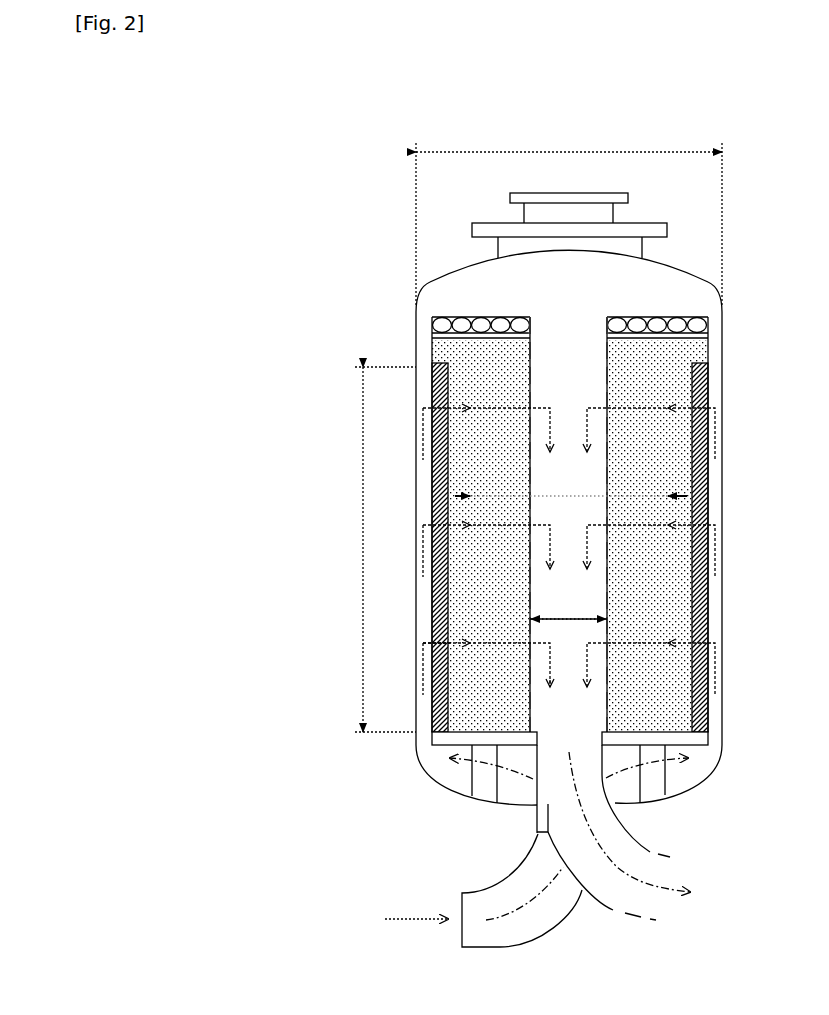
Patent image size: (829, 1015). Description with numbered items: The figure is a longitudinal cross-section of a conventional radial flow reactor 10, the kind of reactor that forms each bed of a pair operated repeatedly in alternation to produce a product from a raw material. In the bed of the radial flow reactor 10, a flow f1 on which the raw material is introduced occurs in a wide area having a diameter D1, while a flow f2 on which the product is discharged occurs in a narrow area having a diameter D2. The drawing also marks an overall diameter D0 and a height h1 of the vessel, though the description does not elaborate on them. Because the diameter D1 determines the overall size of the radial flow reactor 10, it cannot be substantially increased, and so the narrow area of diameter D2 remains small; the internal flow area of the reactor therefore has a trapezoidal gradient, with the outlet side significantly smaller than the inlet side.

The radial flow reactor 10 is at (310, 100).
The outer diameter of tower D0 is at (569, 212).
The diameter of the wide inlet area D1 is at (571, 483).
The diameter of the narrow outlet area D2 is at (568, 602).
The height of packing bed h1 is at (372, 549).
The raw material flow f1 is at (421, 656).
The product flow f2 is at (549, 700).